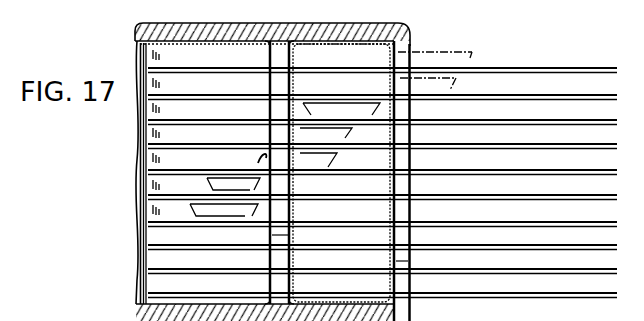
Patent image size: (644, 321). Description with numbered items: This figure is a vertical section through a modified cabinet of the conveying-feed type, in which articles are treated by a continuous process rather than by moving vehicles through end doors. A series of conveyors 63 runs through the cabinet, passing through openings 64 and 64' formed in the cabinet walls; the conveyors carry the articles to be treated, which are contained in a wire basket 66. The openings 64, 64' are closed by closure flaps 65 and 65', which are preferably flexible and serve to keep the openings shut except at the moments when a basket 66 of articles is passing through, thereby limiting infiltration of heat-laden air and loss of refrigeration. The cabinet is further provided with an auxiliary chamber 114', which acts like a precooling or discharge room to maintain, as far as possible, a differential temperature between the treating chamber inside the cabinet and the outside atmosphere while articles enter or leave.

The conveyors 63 is at (565, 69).
The openings 64 is at (261, 172).
The openings 64' is at (422, 172).
The closure flaps 65 is at (262, 235).
The closure flaps 65' is at (383, 260).
The wire basket 66 is at (475, 52).
The auxiliary chamber 114' is at (341, 173).